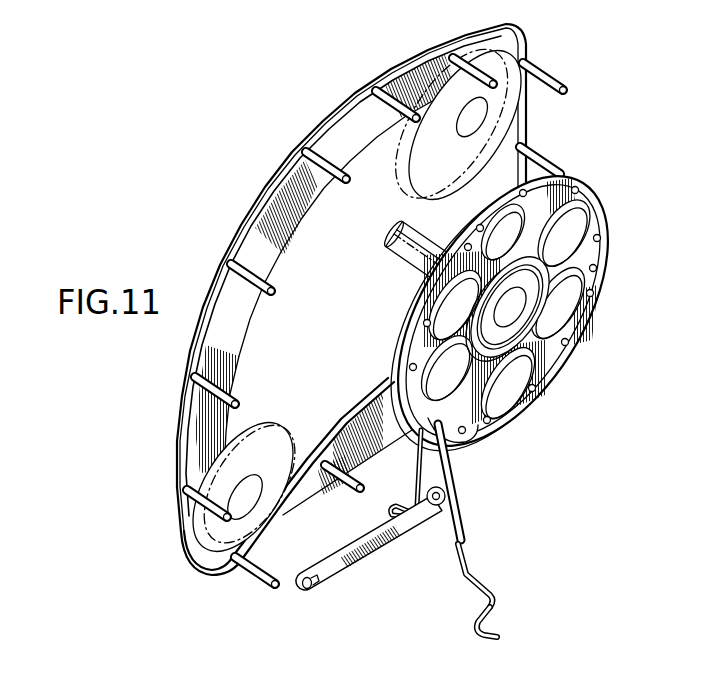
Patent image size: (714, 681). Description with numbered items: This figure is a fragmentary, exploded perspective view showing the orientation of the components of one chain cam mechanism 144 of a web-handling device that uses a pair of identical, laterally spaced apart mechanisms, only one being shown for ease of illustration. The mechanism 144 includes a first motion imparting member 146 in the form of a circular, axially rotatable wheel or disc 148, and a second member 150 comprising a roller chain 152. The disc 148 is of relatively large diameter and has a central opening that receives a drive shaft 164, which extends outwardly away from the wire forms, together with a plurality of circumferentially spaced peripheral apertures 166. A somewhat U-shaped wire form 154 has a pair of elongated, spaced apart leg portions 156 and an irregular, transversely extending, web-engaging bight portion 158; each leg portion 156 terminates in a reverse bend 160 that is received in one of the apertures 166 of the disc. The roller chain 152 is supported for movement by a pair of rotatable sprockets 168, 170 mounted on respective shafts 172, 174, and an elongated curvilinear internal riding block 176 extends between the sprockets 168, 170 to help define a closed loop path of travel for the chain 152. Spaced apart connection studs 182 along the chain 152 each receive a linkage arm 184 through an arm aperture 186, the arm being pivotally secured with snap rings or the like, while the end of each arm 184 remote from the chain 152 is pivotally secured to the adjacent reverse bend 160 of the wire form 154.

The chain cam mechanism 144 is at (180, 127).
The first motion imparting member 146 is at (606, 176).
The disc 148 is at (588, 226).
The second member 150 is at (236, 211).
The roller chain 152 is at (284, 167).
The wire form 154 is at (472, 490).
The leg portion 156 is at (466, 556).
The bight portion 158 is at (494, 627).
The reverse bend 160 is at (472, 432).
The drive shaft 164 is at (384, 258).
The peripheral apertures 166 is at (568, 345).
The sprocket 168 is at (284, 444).
The sprocket 170 is at (413, 132).
The shaft 172 is at (248, 478).
The shaft 174 is at (466, 136).
The internal riding block 176 is at (250, 325).
The connection stud 182 is at (535, 66).
The linkage arm 184 is at (350, 532).
The arm aperture 186 is at (313, 584).